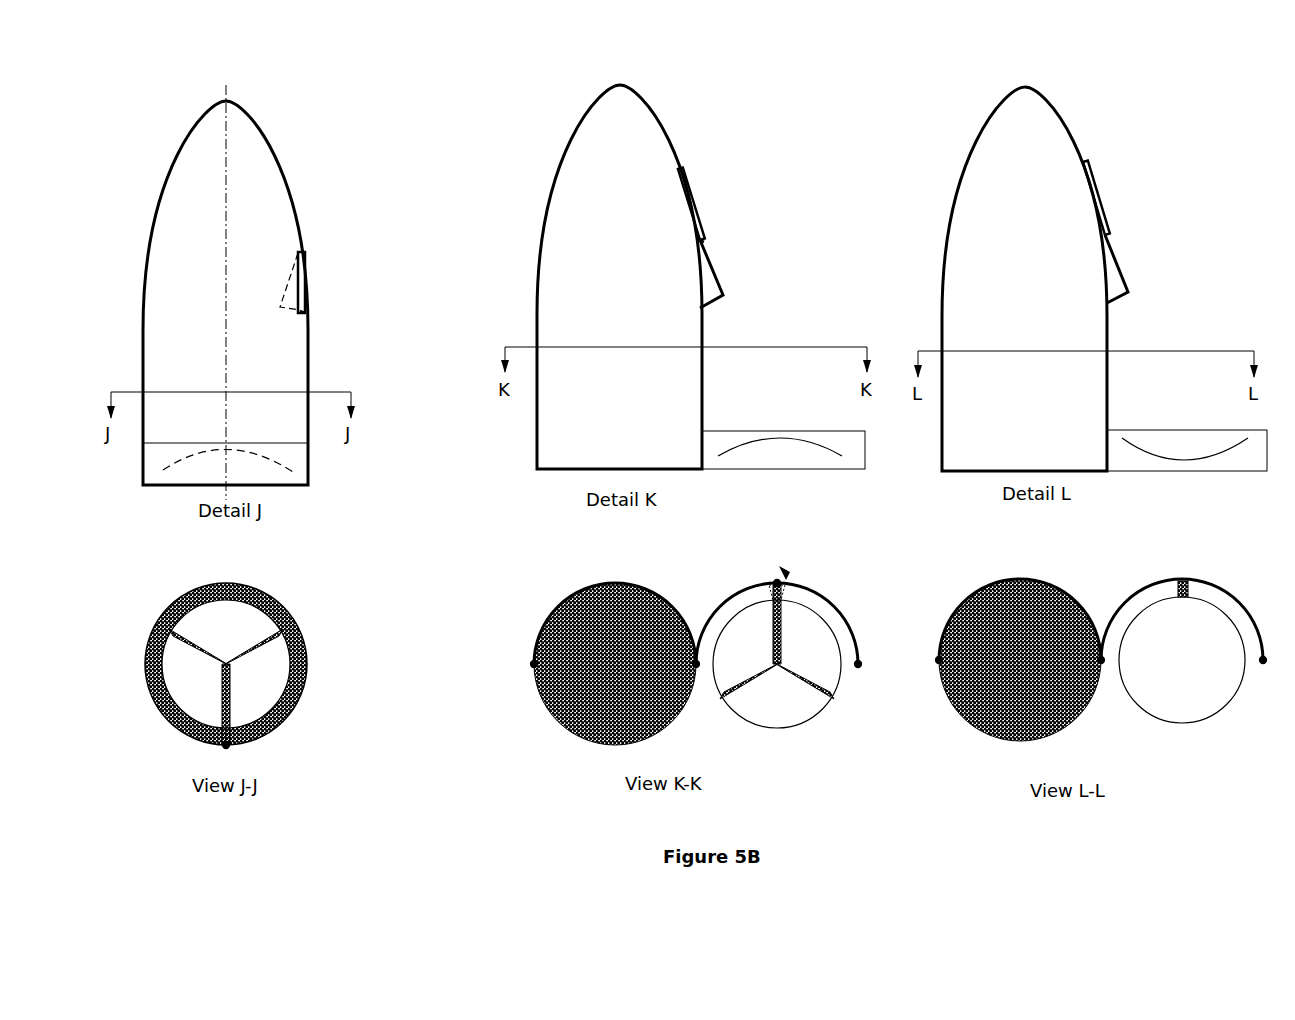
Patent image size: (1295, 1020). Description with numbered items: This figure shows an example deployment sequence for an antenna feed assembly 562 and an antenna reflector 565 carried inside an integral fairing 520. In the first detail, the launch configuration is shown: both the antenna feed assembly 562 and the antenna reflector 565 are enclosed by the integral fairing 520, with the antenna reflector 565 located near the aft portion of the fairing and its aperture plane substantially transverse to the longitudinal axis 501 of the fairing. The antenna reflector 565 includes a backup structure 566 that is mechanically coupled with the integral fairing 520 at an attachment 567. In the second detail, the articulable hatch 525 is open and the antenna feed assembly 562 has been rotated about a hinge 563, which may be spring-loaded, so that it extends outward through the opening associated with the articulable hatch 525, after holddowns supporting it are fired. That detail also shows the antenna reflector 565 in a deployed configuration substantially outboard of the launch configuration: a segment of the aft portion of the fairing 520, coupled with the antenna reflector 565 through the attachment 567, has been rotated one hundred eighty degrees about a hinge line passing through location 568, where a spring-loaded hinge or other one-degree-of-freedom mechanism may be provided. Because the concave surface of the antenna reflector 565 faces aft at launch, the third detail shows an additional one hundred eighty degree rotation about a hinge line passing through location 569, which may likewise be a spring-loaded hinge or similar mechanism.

The integral fairing 520 is at (152, 100).
The longitudinal axis 501 is at (226, 264).
The articulable hatch 525 is at (307, 278).
The antenna feed assembly 562 is at (307, 307).
The hinge 563 is at (703, 241).
The antenna reflector 565 is at (275, 457).
The backup structure 566 is at (252, 645).
The attachment 567 is at (222, 747).
The location 568 is at (697, 667).
The location 569 is at (776, 582).